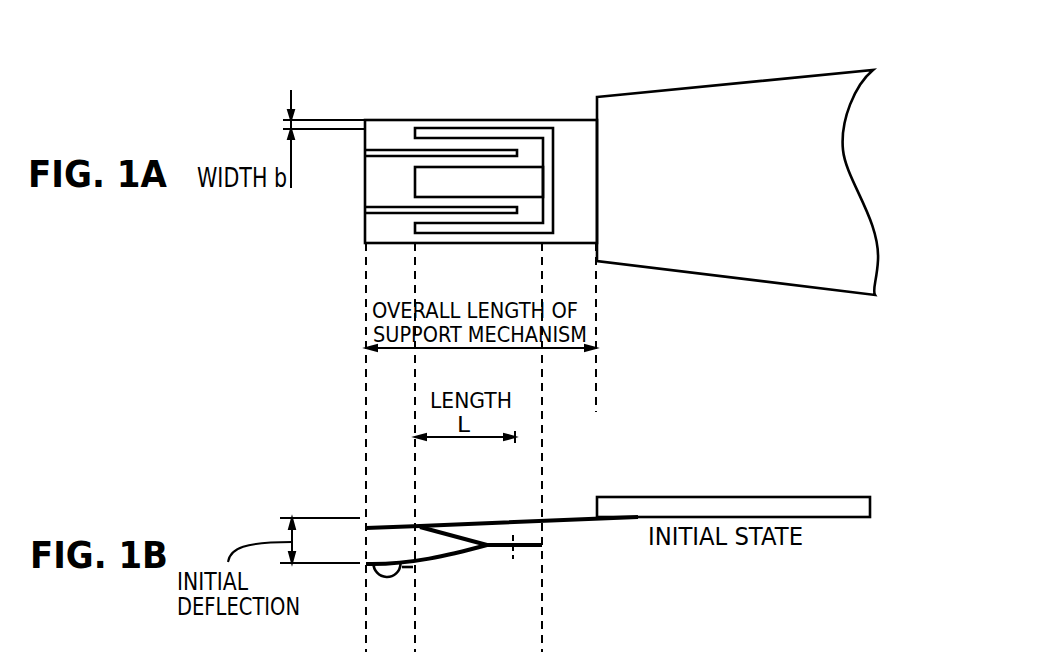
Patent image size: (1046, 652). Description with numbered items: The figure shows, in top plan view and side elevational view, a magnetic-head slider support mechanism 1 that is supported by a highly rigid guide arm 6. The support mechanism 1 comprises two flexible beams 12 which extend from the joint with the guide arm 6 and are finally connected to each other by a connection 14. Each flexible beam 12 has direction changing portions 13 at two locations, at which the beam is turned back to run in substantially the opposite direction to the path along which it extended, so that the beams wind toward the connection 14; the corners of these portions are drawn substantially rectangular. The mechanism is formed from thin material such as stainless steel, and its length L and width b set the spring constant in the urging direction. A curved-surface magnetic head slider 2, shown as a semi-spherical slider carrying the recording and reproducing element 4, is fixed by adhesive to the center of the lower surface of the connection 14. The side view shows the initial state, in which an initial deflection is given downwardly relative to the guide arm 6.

In FIG. 1A, the magnetic-head slider support mechanism 1 is at (577, 127).
In FIG. 1B, the magnetic-head slider support mechanism 1 is at (580, 517).
In FIG. 1B, the magnetic head slider 2 is at (413, 567).
In FIG. 1B, the recording and reproducing element 4 is at (387, 577).
In FIG. 1A, the guide arm 6 is at (681, 88).
In FIG. 1B, the guide arm 6 is at (672, 497).
In FIG. 1A, the flexible beams 12 is at (437, 127).
In FIG. 1A, the direction changing portions 13 is at (528, 213).
In FIG. 1A, the connection 14 is at (368, 200).